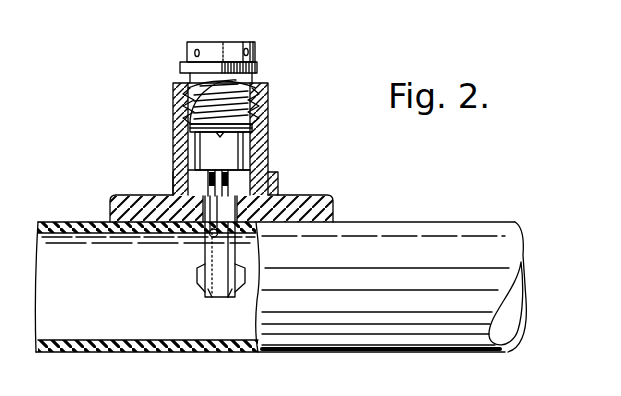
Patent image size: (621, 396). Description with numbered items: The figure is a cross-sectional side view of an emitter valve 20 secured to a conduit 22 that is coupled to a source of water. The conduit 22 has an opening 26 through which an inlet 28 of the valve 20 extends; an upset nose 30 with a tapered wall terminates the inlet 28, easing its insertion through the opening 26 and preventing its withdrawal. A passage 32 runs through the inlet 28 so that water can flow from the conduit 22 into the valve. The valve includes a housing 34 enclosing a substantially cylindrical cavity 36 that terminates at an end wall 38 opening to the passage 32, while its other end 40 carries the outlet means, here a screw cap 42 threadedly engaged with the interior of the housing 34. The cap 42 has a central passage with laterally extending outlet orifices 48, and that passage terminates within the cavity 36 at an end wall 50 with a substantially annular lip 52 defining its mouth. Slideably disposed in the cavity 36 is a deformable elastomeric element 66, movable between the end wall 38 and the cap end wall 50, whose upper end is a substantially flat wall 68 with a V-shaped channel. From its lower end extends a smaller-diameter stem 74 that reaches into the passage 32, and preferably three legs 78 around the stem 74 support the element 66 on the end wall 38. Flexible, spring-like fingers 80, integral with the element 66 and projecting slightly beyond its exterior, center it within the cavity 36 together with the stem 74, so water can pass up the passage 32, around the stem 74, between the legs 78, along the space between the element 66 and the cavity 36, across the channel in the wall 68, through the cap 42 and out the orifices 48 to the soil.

The emitter valve 20 is at (308, 92).
The conduit 22 is at (84, 221).
The opening 26 is at (209, 238).
The inlet 28 is at (201, 265).
The upset nose 30 is at (204, 292).
The passage 32 is at (215, 299).
The housing 34 is at (270, 147).
The cavity 36 is at (186, 181).
The end wall 38 is at (268, 176).
The other end 40 is at (262, 82).
The screw cap 42 is at (228, 42).
The outlet orifices 48 is at (195, 50).
The end wall 50 is at (186, 108).
The annular lip 52 is at (262, 131).
The deformable element 66 is at (195, 137).
The flat wall 68 is at (190, 87).
The stem 74 is at (322, 205).
The legs 78 is at (278, 196).
The fingers 80 is at (189, 129).